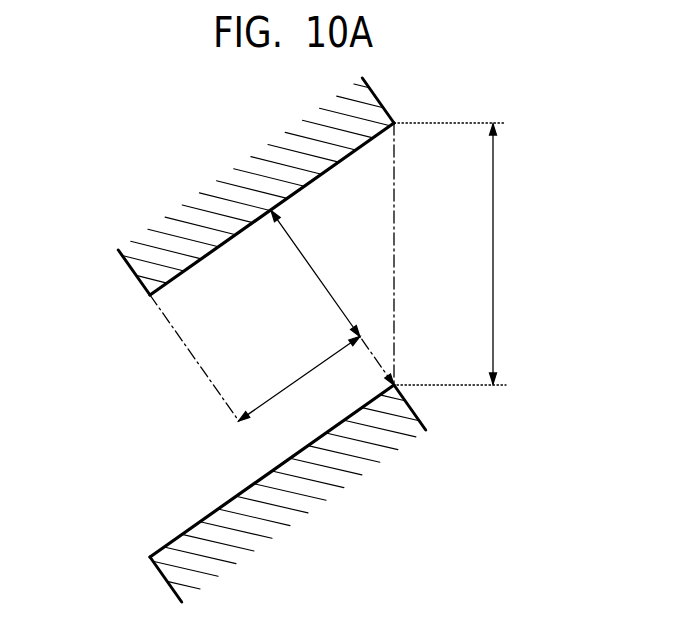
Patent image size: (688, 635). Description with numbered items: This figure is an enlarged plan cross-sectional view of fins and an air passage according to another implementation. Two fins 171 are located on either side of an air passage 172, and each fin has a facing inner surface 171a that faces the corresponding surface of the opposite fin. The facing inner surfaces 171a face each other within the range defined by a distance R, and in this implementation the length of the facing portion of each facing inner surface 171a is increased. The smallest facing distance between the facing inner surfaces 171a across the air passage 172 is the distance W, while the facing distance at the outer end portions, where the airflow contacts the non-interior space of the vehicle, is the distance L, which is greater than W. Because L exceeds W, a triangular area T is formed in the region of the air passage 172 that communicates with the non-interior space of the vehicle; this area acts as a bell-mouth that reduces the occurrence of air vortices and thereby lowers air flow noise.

The fin 171 is at (230, 349).
The facing inner surface 171a is at (194, 270).
The air passage 172 is at (160, 413).
The smallest facing distance W is at (332, 298).
The facing range distance R is at (299, 379).
The triangular area T is at (363, 260).
The facing distance at outer end portions L is at (455, 254).